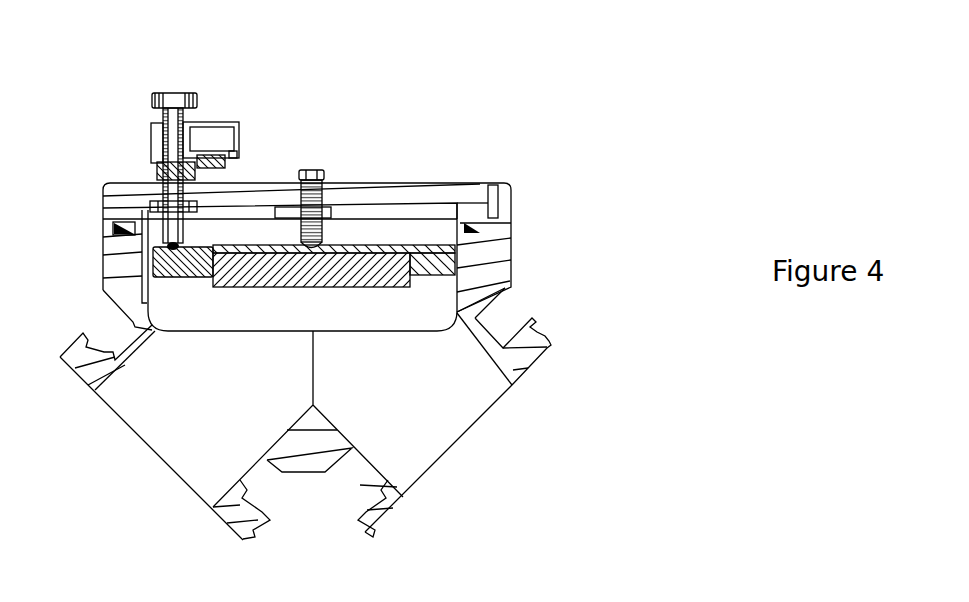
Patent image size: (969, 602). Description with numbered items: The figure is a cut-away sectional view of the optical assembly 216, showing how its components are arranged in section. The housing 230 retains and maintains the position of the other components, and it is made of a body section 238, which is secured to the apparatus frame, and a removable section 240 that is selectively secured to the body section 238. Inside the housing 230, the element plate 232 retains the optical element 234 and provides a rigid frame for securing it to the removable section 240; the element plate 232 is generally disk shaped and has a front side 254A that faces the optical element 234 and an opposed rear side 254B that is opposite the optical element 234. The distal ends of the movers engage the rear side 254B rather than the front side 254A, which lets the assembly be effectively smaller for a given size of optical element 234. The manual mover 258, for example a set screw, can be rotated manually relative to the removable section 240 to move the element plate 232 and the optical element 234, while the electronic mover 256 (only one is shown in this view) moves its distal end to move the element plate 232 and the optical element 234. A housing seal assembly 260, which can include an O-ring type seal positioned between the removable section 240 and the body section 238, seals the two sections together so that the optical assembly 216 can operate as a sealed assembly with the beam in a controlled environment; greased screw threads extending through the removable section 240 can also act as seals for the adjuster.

The optical assembly 216 is at (584, 178).
The housing 230 is at (518, 263).
The element plate 232 is at (428, 256).
The optical element 234 is at (387, 258).
The body section 238 is at (508, 286).
The removable section 240 is at (466, 166).
The front side 254A is at (188, 277).
The rear side 254B is at (258, 243).
The electronic mover 256 is at (158, 123).
The manual mover 258 is at (305, 168).
The housing seal assembly 260 is at (474, 228).